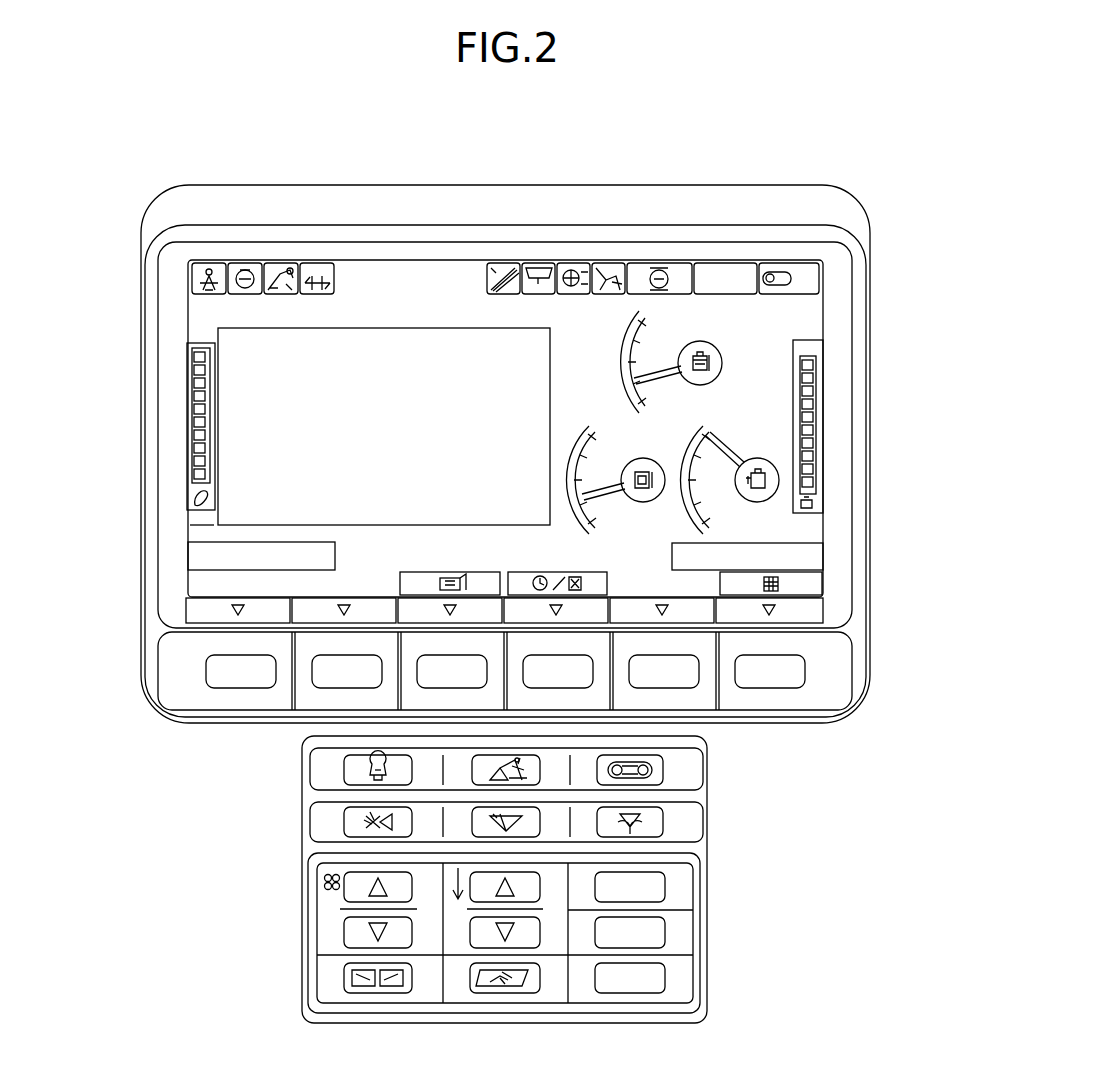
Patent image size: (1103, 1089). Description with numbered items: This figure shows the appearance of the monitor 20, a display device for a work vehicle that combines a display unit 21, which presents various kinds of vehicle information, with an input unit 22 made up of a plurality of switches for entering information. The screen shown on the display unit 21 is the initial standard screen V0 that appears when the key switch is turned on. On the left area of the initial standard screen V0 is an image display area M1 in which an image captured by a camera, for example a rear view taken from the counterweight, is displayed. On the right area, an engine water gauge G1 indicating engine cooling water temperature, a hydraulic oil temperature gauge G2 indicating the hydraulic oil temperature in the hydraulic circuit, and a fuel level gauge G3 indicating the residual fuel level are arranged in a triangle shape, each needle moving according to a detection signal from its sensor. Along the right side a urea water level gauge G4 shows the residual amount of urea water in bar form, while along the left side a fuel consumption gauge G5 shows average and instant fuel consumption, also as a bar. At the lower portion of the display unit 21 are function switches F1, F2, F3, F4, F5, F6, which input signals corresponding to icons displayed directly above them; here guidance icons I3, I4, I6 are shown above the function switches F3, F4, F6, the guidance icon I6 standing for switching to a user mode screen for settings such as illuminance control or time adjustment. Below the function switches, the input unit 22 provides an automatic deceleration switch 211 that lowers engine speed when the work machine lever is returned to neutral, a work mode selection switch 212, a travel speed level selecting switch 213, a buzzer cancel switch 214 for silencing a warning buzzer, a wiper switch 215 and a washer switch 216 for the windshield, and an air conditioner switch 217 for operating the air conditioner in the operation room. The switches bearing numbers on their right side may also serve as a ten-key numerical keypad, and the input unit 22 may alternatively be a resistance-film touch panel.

The monitor 20 is at (737, 178).
The display unit 21 is at (832, 313).
The input unit 22 is at (880, 634).
The image display area M1 is at (222, 328).
The engine water gauge G1 is at (640, 337).
The hydraulic oil temperature gauge G2 is at (590, 450).
The fuel level gauge G3 is at (730, 437).
The urea water level gauge G4 is at (820, 468).
The fuel consumption gauge G5 is at (188, 412).
The initial standard screen V0 is at (203, 523).
The guidance icon I3 is at (522, 574).
The guidance icon I4 is at (420, 580).
The guidance icon I6 is at (822, 583).
The function switch F1 is at (200, 672).
The function switch F2 is at (315, 704).
The function switch F3 is at (425, 704).
The function switch F4 is at (580, 703).
The function switch F5 is at (690, 703).
The function switch F6 is at (800, 703).
The automatic deceleration switch 211 is at (340, 774).
The work mode selection switch 212 is at (466, 766).
The travel speed level selecting switch 213 is at (693, 778).
The buzzer cancel switch 214 is at (312, 838).
The wiper switch 215 is at (470, 833).
The washer switch 216 is at (690, 830).
The air conditioner switch 217 is at (714, 925).